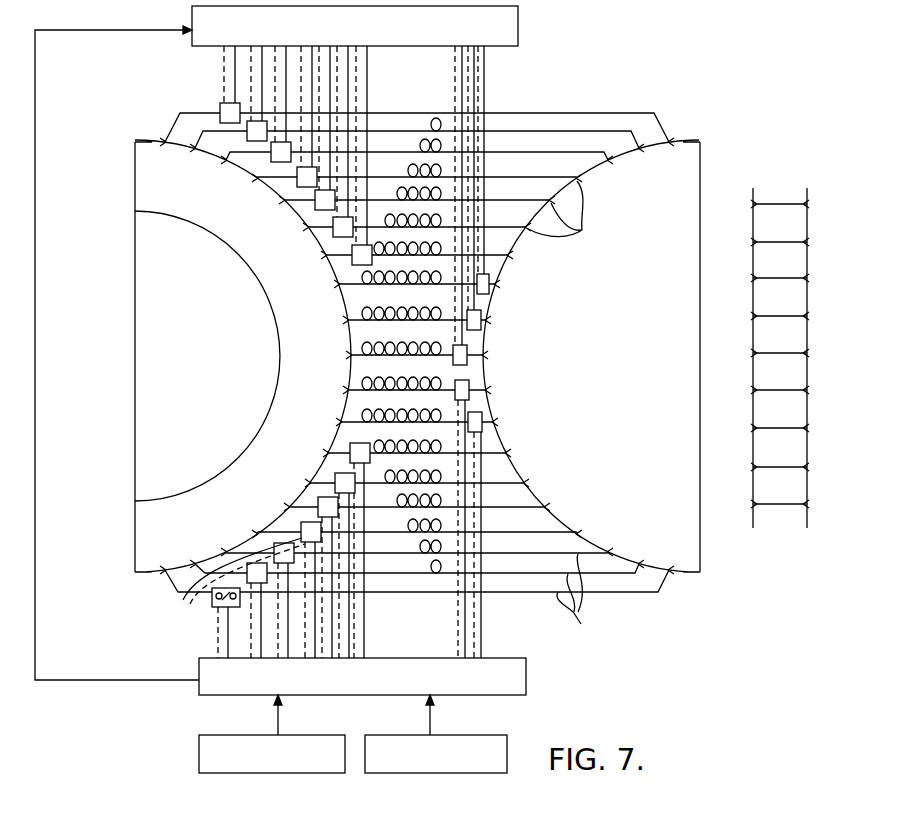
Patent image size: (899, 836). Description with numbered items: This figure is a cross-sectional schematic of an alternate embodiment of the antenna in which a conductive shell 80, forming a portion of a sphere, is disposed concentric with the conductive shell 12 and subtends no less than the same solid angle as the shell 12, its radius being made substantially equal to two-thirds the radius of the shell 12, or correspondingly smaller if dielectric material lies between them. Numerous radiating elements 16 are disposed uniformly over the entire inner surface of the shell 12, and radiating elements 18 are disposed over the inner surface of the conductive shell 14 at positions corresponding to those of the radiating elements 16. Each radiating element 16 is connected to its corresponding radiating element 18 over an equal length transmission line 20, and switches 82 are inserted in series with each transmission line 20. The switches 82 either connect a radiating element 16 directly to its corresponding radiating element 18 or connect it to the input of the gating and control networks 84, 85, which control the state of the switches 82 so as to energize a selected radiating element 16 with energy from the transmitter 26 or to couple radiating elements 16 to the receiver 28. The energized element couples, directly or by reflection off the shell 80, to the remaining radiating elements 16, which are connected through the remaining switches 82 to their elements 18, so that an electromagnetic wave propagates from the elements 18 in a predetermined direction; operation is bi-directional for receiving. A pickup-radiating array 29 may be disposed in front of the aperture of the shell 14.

The conductive shell 12 is at (152, 141).
The conductive shell 14 is at (683, 141).
The radiating elements 16 is at (342, 316).
The radiating elements 18 is at (565, 213).
The transmission line 20 is at (577, 596).
The transmitter 26 is at (199, 758).
The receiver 28 is at (507, 755).
The pickup-radiating array 29 is at (824, 305).
The conductive shell 80 is at (244, 455).
The switches 82 is at (200, 600).
The gating and control network 84 is at (526, 684).
The gating and control network 85 is at (518, 46).